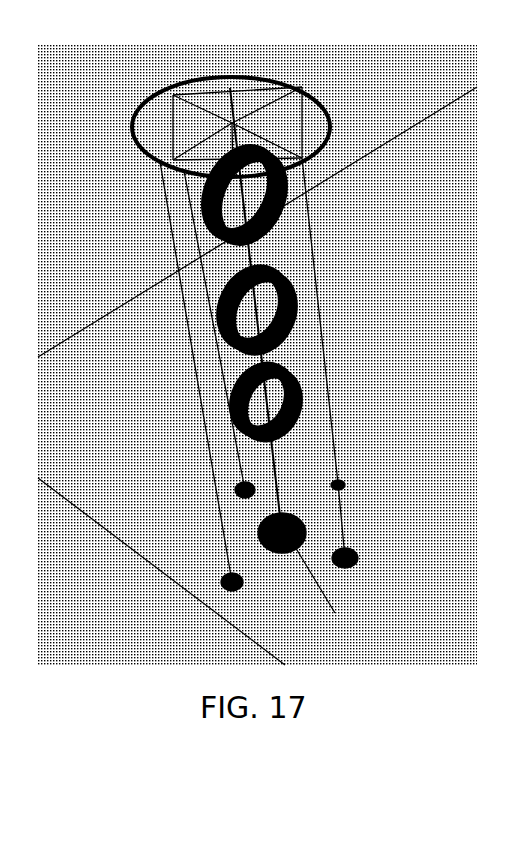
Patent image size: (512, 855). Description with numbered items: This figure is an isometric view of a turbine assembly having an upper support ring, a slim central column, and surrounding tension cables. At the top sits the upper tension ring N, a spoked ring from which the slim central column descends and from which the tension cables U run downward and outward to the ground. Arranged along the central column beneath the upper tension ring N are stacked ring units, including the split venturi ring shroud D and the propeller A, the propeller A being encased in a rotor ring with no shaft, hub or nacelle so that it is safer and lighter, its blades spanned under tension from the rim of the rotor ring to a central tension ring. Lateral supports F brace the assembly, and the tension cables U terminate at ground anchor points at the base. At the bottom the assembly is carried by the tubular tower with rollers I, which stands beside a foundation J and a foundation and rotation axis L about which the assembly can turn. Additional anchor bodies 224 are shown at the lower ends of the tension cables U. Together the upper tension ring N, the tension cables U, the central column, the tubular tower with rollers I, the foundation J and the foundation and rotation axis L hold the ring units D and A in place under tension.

The tension cable U is at (186, 75).
The upper tension ring N is at (332, 113).
The split venturi ring shroud D is at (275, 302).
The propeller A is at (245, 415).
The lateral supports F is at (328, 378).
The tubular tower with rollers I is at (260, 535).
The foundation J is at (358, 553).
The weights 224 is at (323, 600).
The foundation and rotation axis L is at (328, 607).